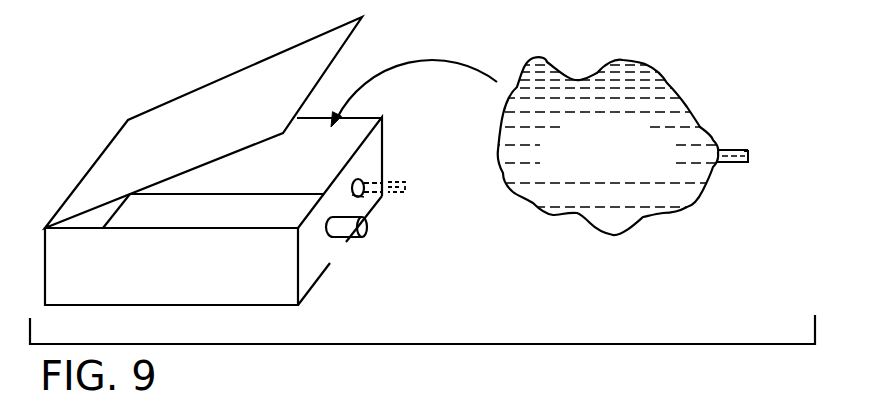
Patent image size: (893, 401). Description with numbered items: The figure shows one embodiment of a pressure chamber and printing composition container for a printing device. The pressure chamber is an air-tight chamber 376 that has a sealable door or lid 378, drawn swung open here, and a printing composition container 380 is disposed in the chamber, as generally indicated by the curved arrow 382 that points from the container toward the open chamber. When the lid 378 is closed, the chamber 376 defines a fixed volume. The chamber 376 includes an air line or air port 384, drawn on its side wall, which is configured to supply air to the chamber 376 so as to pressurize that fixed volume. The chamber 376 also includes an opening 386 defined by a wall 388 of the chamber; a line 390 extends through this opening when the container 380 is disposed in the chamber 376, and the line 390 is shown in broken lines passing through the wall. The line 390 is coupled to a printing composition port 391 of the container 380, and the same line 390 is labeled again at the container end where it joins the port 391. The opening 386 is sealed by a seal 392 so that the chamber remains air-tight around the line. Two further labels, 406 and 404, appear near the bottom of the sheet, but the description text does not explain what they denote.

The air-tight chamber 376 is at (205, 283).
The lid 378 is at (206, 97).
The printing composition container 380 is at (652, 97).
The arrow 382 is at (410, 60).
The air port 384 is at (348, 236).
The opening 386 is at (363, 179).
The wall 388 is at (307, 283).
The line 390 is at (404, 178).
The printing composition port 391 is at (718, 149).
The seal 392 is at (365, 196).
The element 404 is at (649, 390).
The element 406 is at (569, 390).